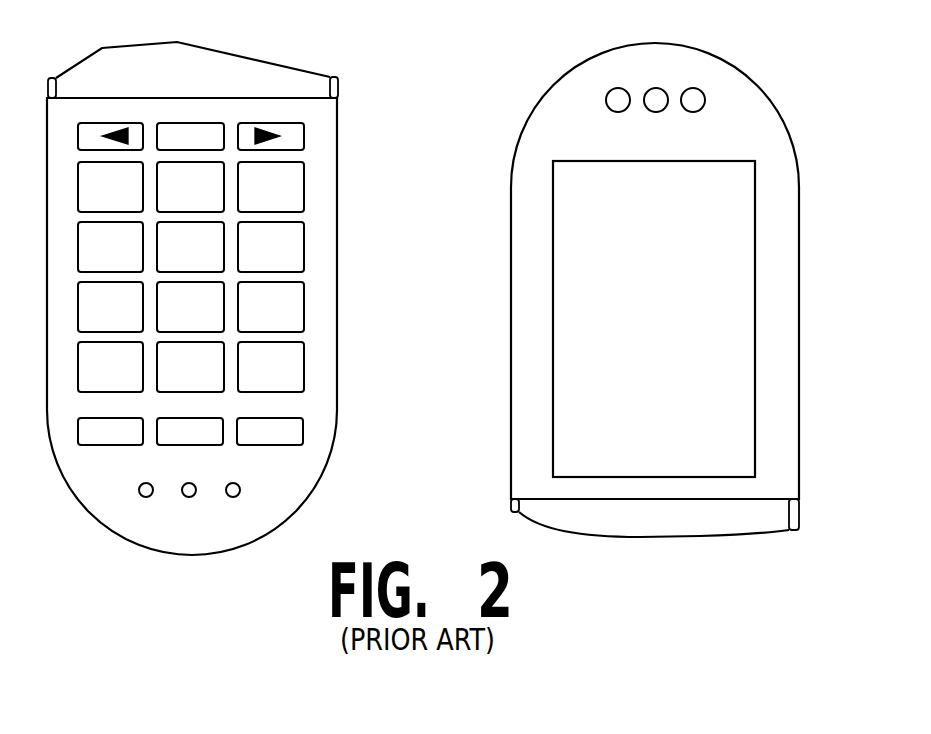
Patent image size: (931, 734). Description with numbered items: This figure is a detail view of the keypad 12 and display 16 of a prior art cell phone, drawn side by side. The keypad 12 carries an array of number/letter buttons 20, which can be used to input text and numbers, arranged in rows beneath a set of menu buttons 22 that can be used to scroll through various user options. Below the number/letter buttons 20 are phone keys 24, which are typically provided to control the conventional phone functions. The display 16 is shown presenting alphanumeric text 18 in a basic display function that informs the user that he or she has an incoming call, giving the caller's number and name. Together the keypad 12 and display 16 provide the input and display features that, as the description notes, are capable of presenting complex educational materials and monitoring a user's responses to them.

The keypad 12 is at (247, 298).
The display 16 is at (711, 290).
The alphanumeric text 18 is at (822, 191).
The number/letter button 20 is at (362, 177).
The menu button 22 is at (367, 106).
The phone keys 24 is at (340, 483).